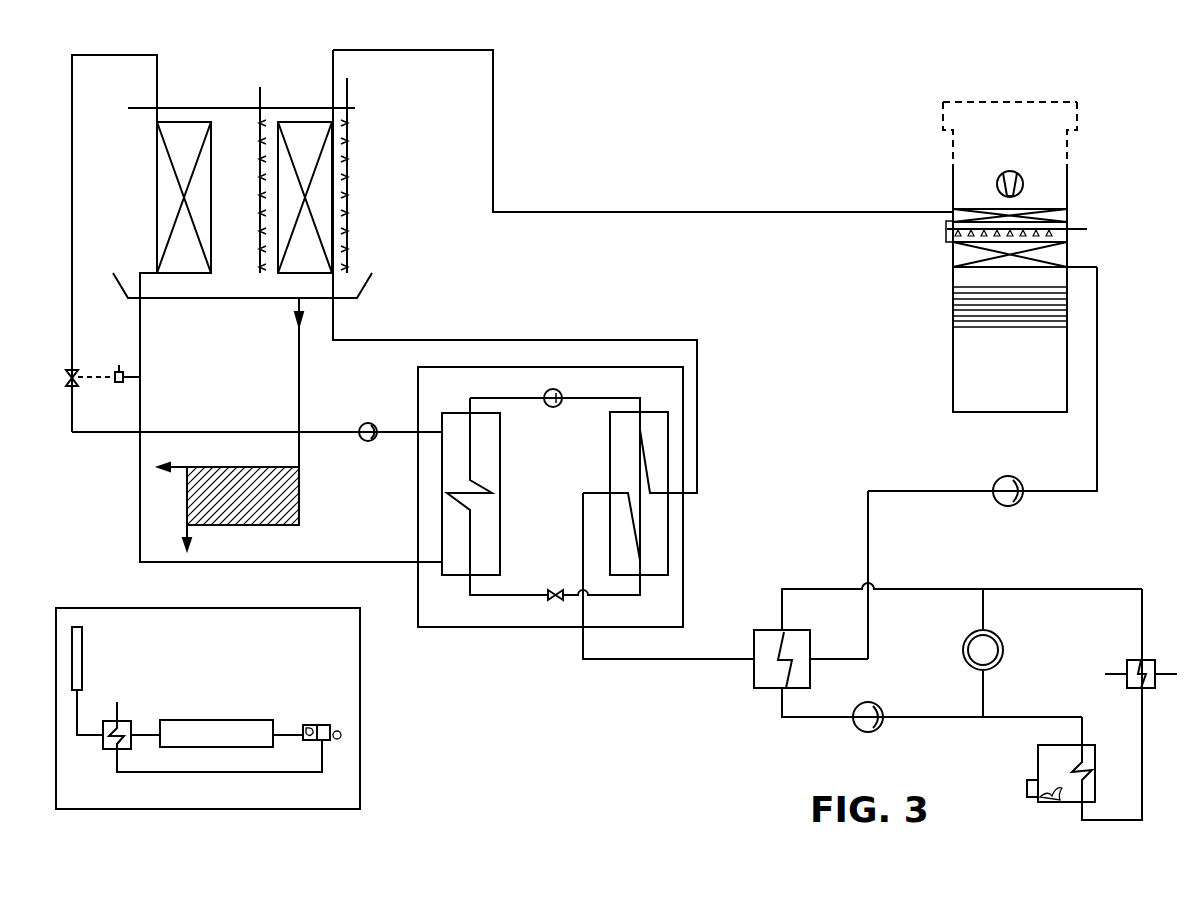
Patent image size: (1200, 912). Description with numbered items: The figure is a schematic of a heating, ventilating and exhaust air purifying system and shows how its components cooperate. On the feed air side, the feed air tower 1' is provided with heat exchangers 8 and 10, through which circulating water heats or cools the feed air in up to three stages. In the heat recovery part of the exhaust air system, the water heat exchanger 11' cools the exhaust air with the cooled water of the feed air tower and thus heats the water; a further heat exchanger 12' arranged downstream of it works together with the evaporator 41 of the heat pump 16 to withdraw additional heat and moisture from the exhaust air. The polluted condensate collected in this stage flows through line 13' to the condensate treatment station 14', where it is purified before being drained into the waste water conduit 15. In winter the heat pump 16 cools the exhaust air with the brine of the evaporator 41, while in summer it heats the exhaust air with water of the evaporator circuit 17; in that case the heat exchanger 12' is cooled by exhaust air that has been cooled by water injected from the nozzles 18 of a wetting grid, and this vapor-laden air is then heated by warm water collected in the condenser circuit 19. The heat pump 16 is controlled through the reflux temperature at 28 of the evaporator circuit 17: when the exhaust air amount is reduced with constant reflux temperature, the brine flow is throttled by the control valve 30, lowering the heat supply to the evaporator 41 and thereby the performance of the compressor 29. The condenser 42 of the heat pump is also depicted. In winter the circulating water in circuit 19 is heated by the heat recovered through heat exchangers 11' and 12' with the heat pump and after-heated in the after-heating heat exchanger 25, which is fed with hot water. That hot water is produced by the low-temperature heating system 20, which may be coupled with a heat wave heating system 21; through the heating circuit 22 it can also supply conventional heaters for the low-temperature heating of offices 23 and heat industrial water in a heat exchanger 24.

The feed air tower 1' is at (1027, 257).
The heat exchanger 8 is at (1060, 217).
The heat exchanger 10 is at (1057, 255).
The water heat exchanger 11' is at (305, 172).
The heat exchanger 12' is at (191, 172).
The line 13' is at (282, 411).
The condensate treatment station 14' is at (248, 500).
The waste water conduit 15 is at (175, 473).
The heat pump 16 is at (683, 573).
The evaporator circuit 17 is at (140, 538).
The nozzles 18 is at (368, 93).
The condenser circuit 19 is at (630, 660).
The low-temperature heating system 20 is at (1047, 757).
The heat wave heating system 21 is at (360, 785).
The heating circuit 22 is at (1142, 743).
The conventional heaters 23 is at (997, 663).
The heat exchanger 24 is at (1127, 662).
The after-heating heat exchanger 25 is at (767, 683).
The reflux temperature point 28 is at (109, 361).
The compressor 29 is at (553, 407).
The control valve 30 is at (74, 388).
The evaporator 41 is at (478, 542).
The condenser 42 is at (620, 457).